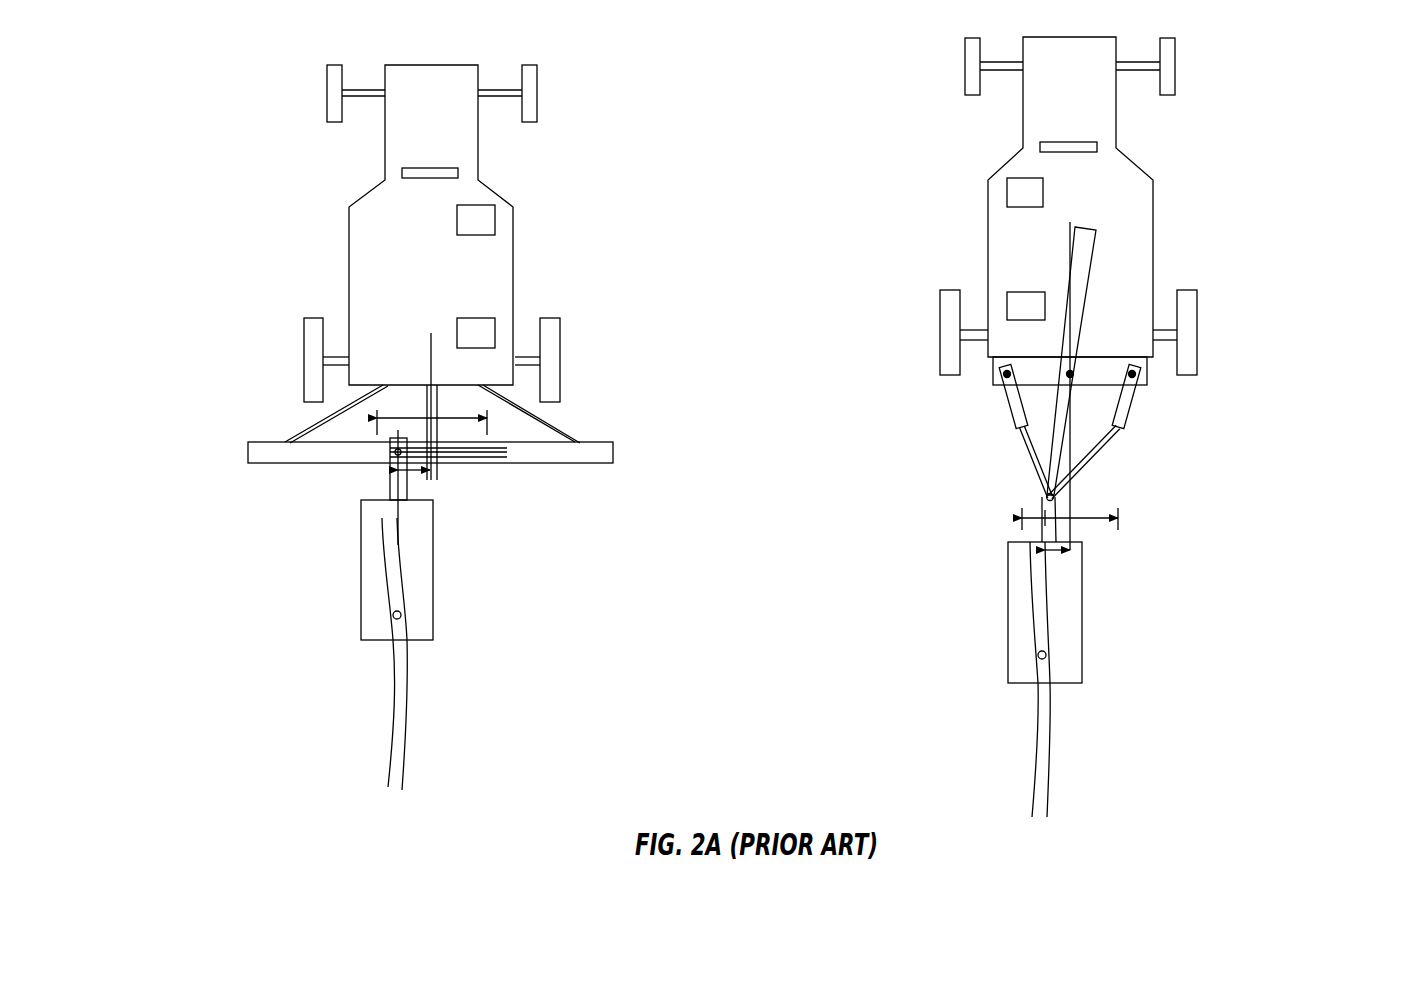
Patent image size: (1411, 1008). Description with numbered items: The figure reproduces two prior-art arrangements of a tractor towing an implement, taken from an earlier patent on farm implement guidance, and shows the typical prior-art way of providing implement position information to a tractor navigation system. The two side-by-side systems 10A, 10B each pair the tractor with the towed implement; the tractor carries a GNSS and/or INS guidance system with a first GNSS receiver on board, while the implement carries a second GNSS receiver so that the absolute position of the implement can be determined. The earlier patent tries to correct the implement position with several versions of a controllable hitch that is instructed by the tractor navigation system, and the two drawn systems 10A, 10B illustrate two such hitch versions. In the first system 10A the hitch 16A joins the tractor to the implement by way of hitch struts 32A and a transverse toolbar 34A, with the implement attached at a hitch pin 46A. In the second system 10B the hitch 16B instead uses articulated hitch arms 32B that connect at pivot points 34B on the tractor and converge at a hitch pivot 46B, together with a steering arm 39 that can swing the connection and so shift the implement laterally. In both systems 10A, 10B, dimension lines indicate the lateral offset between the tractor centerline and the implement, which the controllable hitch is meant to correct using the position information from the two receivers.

The prior art tractor-implement system (fixed hitch) 10A is at (645, 132).
The prior art tractor-implement system (articulated hitch) 10B is at (1310, 120).
The fixed hitch assembly 16A is at (270, 442).
The articulated hitch assembly 16B is at (995, 389).
The hitch struts 32A is at (487, 450).
The hitch arms / actuators 32B is at (1013, 422).
The toolbar 34A is at (388, 460).
The hitch pivot points 34B is at (1077, 392).
The steering arm 39 is at (1078, 226).
The hitch pin 46A is at (393, 468).
The hitch pivot 46B is at (1040, 495).